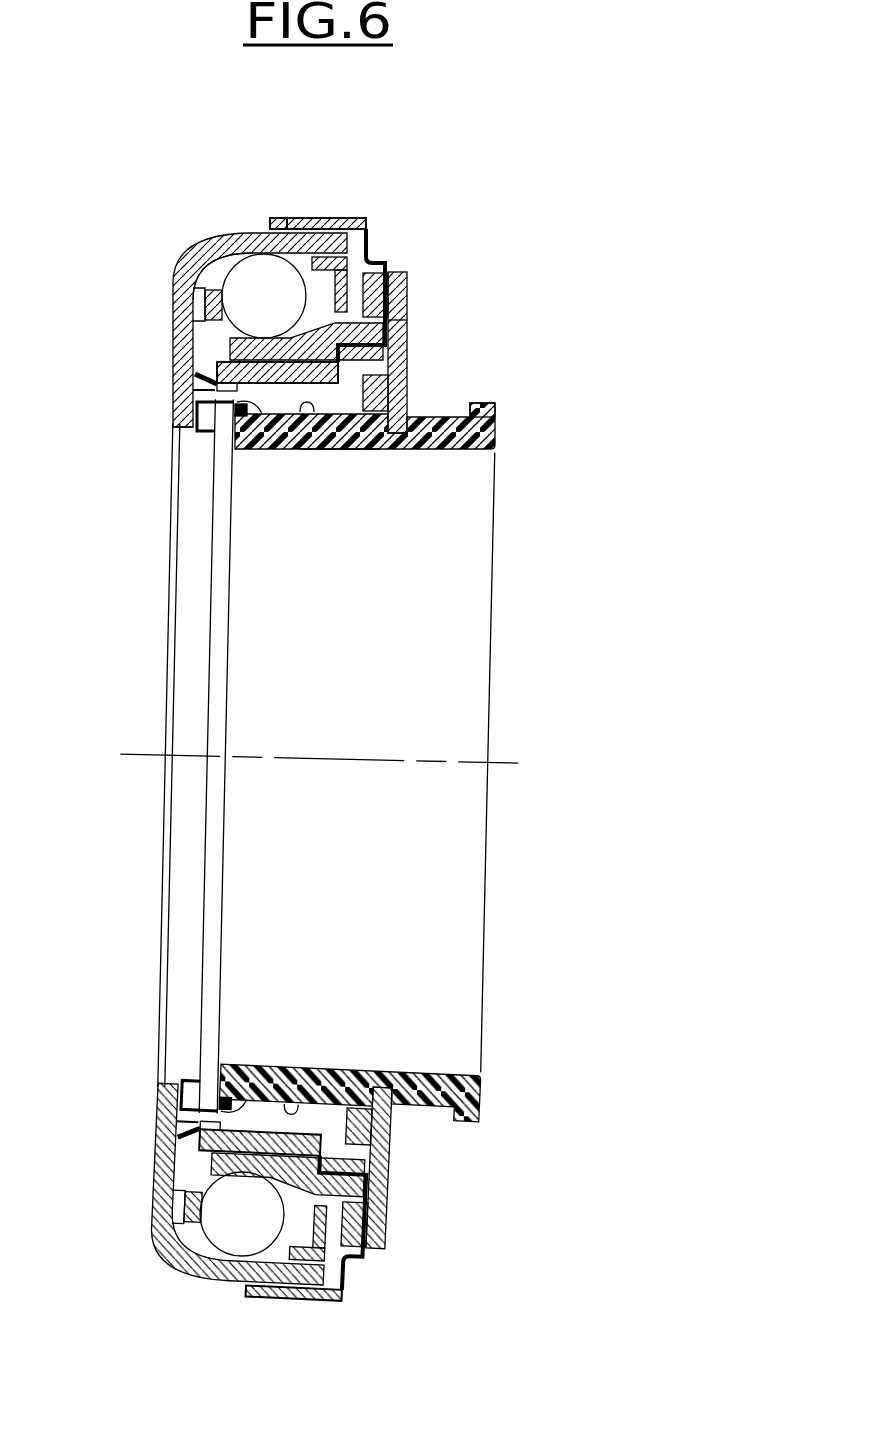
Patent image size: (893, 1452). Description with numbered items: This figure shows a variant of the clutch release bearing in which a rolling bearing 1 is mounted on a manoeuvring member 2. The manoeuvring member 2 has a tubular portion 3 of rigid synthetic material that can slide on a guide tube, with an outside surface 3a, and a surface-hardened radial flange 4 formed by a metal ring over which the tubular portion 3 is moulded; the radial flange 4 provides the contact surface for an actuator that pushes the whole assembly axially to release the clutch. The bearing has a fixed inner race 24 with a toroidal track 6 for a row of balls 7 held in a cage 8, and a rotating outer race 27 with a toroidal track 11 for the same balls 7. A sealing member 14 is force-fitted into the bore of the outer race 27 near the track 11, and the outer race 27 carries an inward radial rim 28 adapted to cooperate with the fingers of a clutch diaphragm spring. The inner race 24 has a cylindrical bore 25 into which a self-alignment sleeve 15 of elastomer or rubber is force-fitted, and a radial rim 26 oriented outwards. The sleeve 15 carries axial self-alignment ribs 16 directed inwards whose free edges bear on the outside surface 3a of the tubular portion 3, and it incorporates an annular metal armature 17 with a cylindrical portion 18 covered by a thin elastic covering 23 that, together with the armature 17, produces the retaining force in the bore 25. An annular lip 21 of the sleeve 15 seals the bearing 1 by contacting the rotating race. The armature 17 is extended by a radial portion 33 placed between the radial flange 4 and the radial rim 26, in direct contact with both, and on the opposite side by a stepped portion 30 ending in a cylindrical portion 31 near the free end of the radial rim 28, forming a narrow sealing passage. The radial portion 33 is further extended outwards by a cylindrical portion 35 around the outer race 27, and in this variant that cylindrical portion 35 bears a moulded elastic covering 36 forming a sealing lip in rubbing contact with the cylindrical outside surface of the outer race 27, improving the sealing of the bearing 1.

The rolling bearing 1 is at (304, 256).
The manoeuvring member 2 is at (510, 425).
The tubular portion 3 is at (490, 442).
The outside surface 3a is at (340, 447).
The radial flange 4 is at (408, 295).
The toroidal track 6 is at (210, 318).
The balls 7 is at (178, 270).
The cage 8 is at (207, 285).
The toroidal track 11 is at (240, 293).
The sealing member 14 is at (368, 245).
The self-alignment sleeve 15 is at (407, 367).
The self-alignment ribs 16 is at (407, 397).
The annular metal armature 17 is at (262, 405).
The cylindrical portion 18 is at (307, 412).
The annular lip 21 is at (245, 375).
The elastic covering 23 is at (237, 352).
The inner race 24 is at (410, 320).
The cylindrical bore 25 is at (200, 392).
The radial rim 26 is at (392, 262).
The outer race 27 is at (217, 245).
The radial rim 28 is at (195, 410).
The stepped portion 30 is at (188, 427).
The cylindrical portion 31 is at (193, 513).
The radial portion 33 is at (407, 290).
The cylindrical portion 35 is at (311, 218).
The elastic covering 36 is at (281, 217).